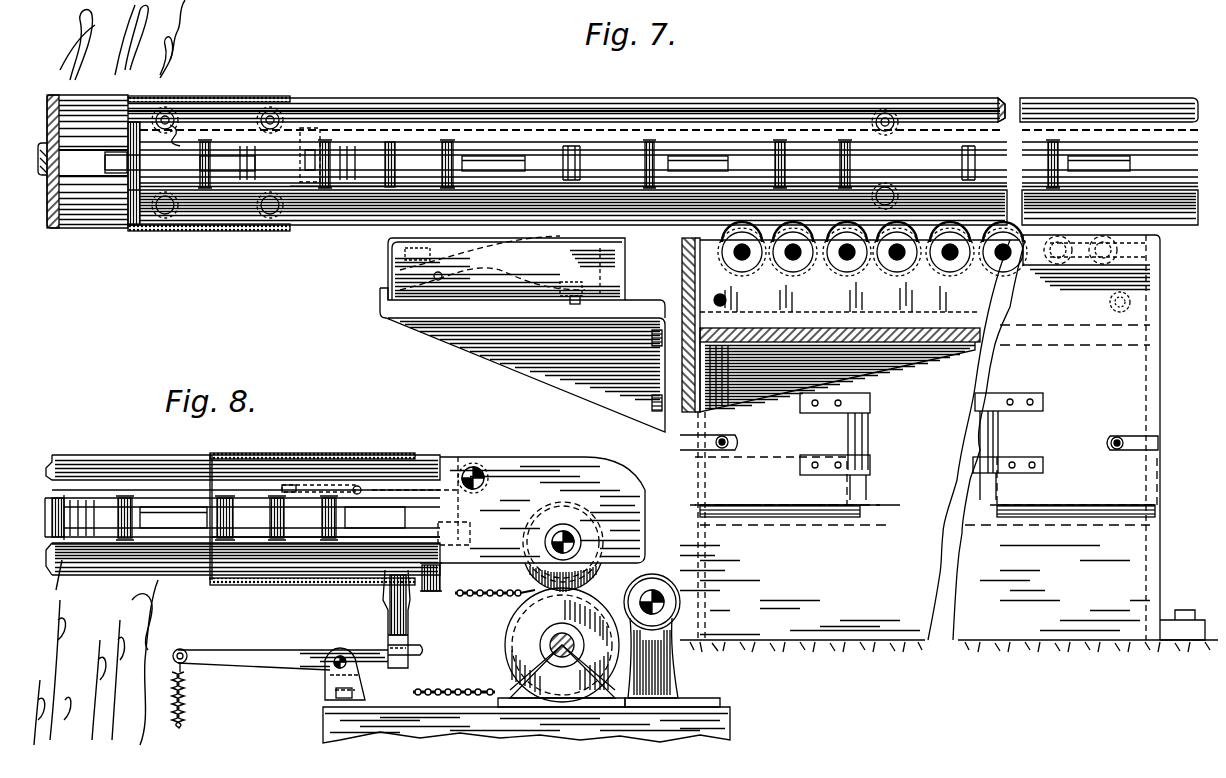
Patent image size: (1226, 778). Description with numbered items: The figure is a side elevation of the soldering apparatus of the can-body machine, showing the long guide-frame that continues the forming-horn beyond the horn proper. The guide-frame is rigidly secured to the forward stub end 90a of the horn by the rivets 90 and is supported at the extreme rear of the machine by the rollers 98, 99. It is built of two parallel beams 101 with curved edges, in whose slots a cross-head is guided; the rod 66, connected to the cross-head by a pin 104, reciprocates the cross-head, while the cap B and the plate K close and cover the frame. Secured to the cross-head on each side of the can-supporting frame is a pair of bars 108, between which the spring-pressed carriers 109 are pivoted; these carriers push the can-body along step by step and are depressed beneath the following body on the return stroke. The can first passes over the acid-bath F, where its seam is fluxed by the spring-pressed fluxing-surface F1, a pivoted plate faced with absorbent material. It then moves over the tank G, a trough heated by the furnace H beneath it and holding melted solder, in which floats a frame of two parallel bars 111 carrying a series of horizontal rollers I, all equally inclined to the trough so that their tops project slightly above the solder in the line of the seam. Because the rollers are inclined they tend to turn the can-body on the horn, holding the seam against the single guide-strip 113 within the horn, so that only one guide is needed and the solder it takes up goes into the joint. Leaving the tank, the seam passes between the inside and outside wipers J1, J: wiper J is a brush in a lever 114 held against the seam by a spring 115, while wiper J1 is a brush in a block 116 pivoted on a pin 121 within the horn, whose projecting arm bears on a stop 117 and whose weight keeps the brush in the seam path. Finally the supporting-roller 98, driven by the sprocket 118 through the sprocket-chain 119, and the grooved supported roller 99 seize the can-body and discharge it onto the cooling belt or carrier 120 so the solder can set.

In FIG. 7, the cap B is at (78, 228).
In FIG. 7, the rod 66 is at (42, 176).
In FIG. 7, the parallel beams 101 is at (700, 98).
In FIG. 8, the parallel beams 101 is at (92, 458).
In FIG. 7, the plate K is at (252, 98).
In FIG. 8, the plate K is at (312, 455).
In FIG. 7, the guide-strip 113 is at (318, 225).
In FIG. 8, the guide-strip 113 is at (120, 580).
In FIG. 7, the pin 104 is at (318, 124).
In FIG. 7, the rivets 90 is at (172, 115).
In FIG. 7, the forward stub end of the horn 90a is at (174, 108).
In FIG. 7, the spring-pressed carriers 109 is at (488, 163).
In FIG. 8, the spring-pressed carriers 109 is at (186, 517).
In FIG. 7, the bars 108 is at (628, 150).
In FIG. 8, the bars 108 is at (204, 511).
In FIG. 7, the acid-bath F is at (506, 270).
In FIG. 7, the spring-pressed fluxing-surface F1 is at (472, 258).
In FIG. 7, the horizontal rollers I is at (778, 256).
In FIG. 7, the parallel bars 111 is at (835, 297).
In FIG. 7, the furnace H is at (880, 370).
In FIG. 7, the tank G is at (795, 336).
In FIG. 8, the stop 117 is at (292, 480).
In FIG. 8, the pin 121 is at (360, 487).
In FIG. 8, the block 116 is at (428, 472).
In FIG. 8, the supported roller 99 is at (590, 572).
In FIG. 8, the cooling belt or carrier 120 is at (655, 578).
In FIG. 8, the supporting-roller 98 is at (508, 645).
In FIG. 8, the sprocket-chain 119 is at (472, 600).
In FIG. 8, the sprocket 118 is at (511, 604).
In FIG. 8, the inside wiper J1 is at (440, 580).
In FIG. 8, the outside wiper J is at (398, 614).
In FIG. 8, the lever 114 is at (280, 662).
In FIG. 8, the spring 115 is at (188, 704).